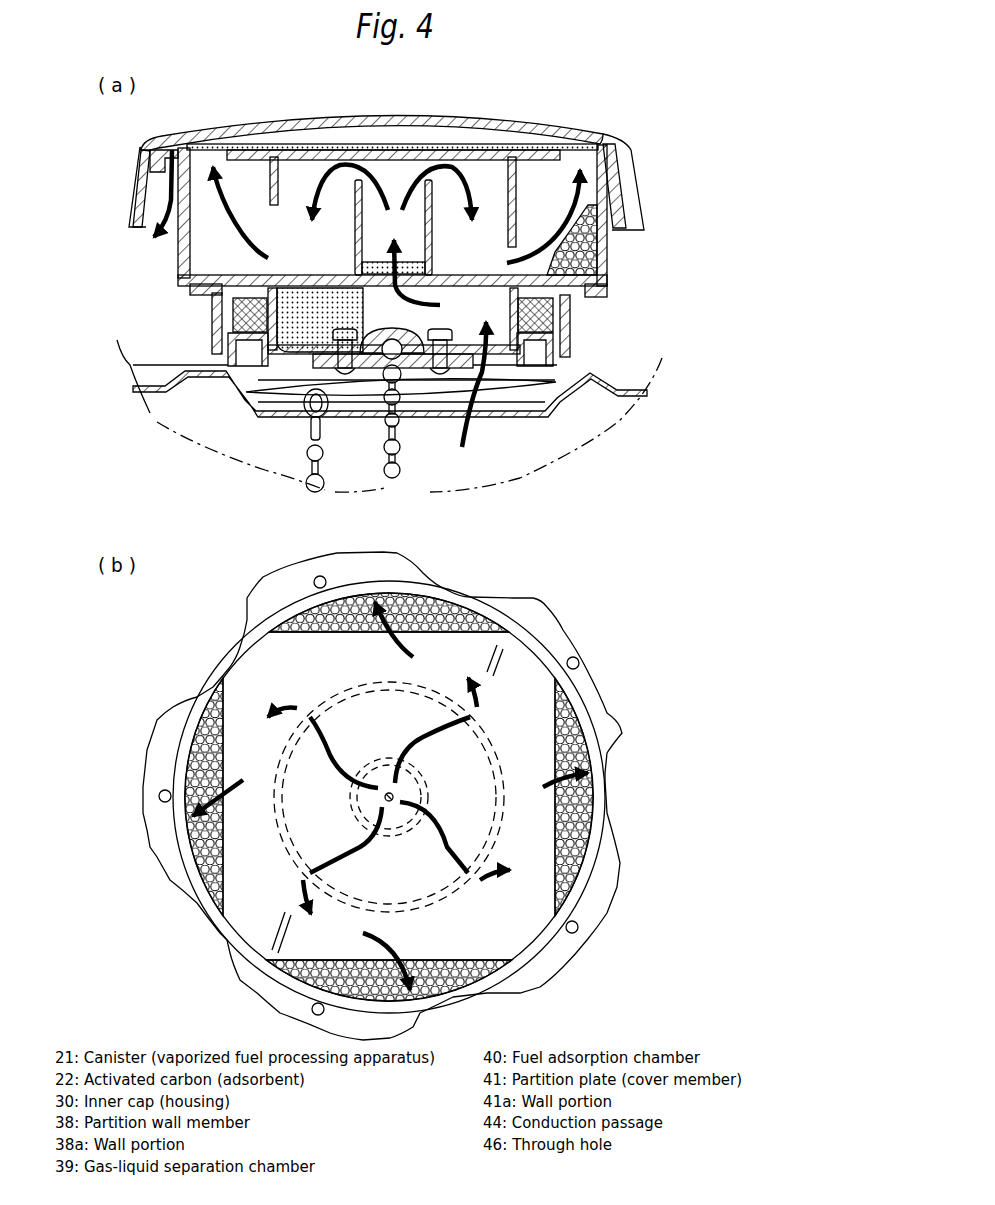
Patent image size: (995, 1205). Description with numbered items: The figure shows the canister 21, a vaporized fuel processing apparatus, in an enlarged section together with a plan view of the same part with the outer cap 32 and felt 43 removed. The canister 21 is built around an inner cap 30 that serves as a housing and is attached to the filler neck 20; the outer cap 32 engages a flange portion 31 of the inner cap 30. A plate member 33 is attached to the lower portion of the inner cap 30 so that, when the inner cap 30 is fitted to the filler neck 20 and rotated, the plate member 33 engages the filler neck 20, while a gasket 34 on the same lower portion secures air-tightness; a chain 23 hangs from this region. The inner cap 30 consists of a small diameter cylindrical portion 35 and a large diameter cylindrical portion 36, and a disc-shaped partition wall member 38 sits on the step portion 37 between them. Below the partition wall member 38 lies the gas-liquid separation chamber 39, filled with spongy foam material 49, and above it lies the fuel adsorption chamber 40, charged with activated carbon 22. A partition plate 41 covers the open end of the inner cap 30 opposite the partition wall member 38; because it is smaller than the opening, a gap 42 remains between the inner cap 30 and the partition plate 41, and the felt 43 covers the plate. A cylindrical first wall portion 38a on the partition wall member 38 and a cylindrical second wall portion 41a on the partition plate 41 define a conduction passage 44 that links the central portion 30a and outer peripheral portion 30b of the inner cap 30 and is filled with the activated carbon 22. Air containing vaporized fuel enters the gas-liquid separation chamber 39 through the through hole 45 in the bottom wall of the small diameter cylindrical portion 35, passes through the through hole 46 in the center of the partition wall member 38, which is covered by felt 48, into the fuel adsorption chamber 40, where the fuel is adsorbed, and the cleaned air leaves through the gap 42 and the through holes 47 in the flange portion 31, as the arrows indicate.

The filler neck 20 is at (480, 425).
The canister 21 is at (630, 120).
The activated carbon 22 is at (610, 265).
The chain 23 is at (303, 455).
The inner cap 30 is at (613, 292).
The central portion 30a is at (395, 183).
The outer peripheral portion 30b is at (590, 197).
The flange portion 31 is at (167, 138).
The outer cap 32 is at (482, 110).
The plate member 33 is at (417, 365).
The gasket 34 is at (570, 310).
The small diameter cylindrical portion 35 is at (267, 322).
The large diameter cylindrical portion 36 is at (183, 283).
The step portion 37 is at (230, 290).
The partition wall member 38 is at (485, 278).
The first wall portion 38a is at (358, 220).
The gas-liquid separation chamber 39 is at (473, 313).
The fuel adsorption chamber 40 is at (311, 190).
The partition plate 41 is at (320, 155).
The second wall portion 41a is at (270, 185).
The gap 42 is at (217, 152).
The felt 43 is at (367, 150).
The conduction passage 44 is at (473, 173).
The through hole 45 is at (487, 350).
The through hole 46 is at (390, 286).
The through holes 47 is at (133, 190).
The felt 48 is at (370, 263).
The foam material 49 is at (305, 300).